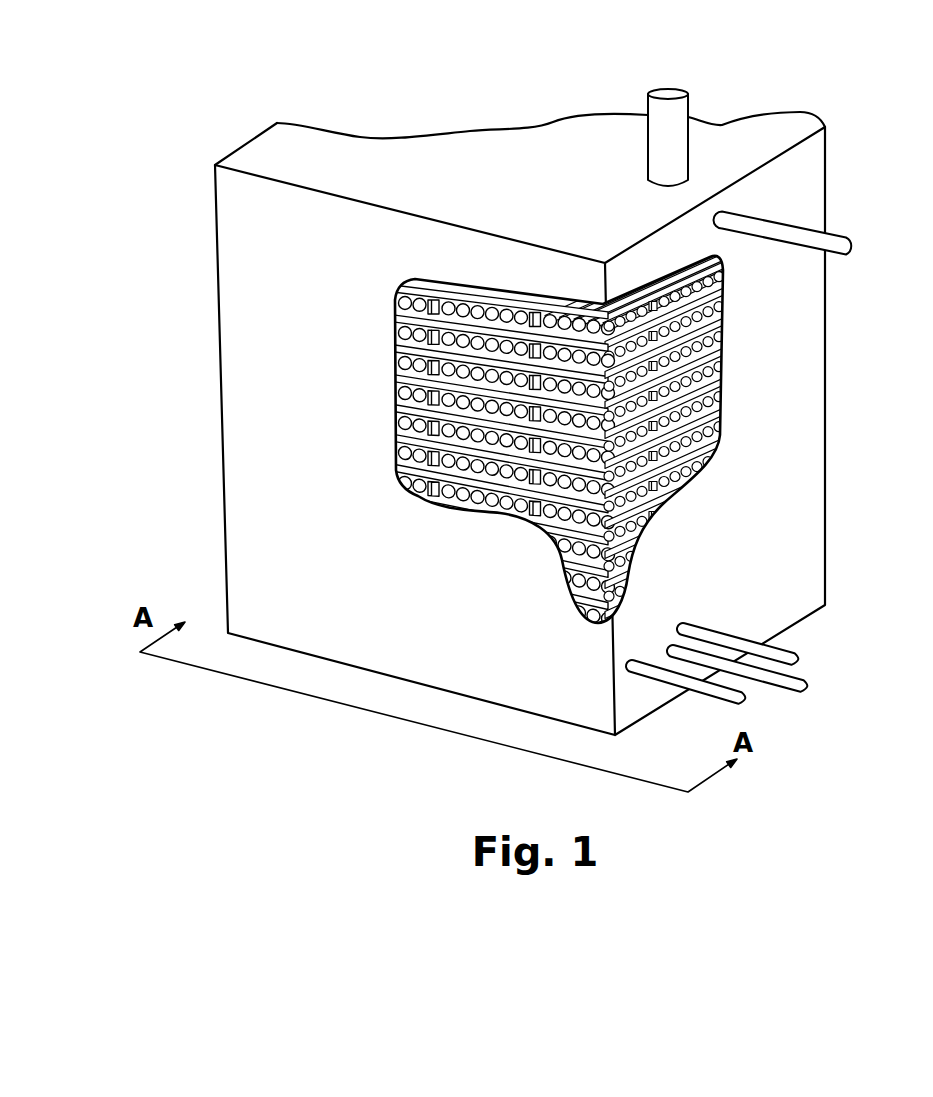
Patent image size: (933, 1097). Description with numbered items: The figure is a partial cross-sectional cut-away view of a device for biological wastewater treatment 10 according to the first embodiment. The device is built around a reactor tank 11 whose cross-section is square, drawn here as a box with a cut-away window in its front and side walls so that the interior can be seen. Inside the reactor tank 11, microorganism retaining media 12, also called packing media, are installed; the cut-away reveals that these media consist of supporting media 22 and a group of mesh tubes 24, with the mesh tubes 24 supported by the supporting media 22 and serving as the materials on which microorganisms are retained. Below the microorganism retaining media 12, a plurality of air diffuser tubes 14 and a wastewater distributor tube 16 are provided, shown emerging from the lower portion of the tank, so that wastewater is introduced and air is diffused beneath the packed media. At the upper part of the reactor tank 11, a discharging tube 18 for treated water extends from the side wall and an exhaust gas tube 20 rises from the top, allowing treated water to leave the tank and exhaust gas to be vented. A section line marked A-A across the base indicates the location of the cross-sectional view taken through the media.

The device for biological wastewater treatment 10 is at (487, 393).
The reactor tank 11 is at (826, 455).
The microorganism retaining media 12 is at (430, 458).
The air diffuser tubes 14 is at (750, 679).
The wastewater distributor tube 16 is at (778, 693).
The discharging tube 18 is at (795, 227).
The exhaust gas tube 20 is at (688, 96).
The supporting media 22 is at (395, 341).
The mesh tubes 24 is at (395, 319).